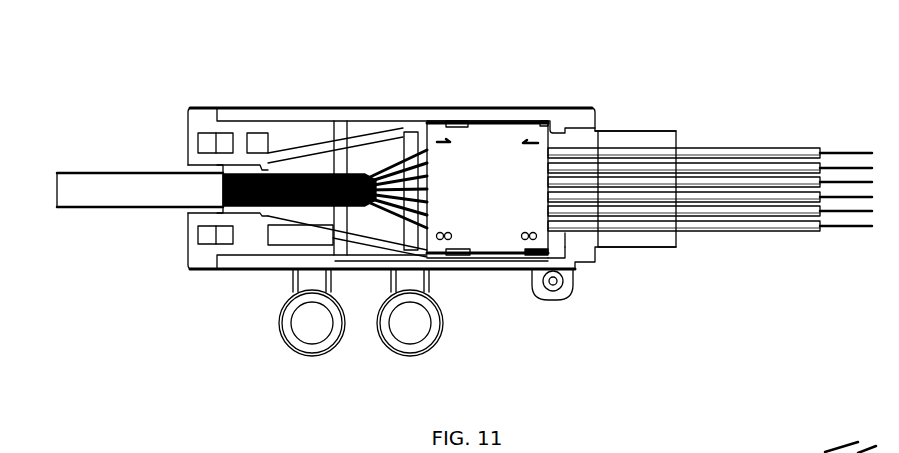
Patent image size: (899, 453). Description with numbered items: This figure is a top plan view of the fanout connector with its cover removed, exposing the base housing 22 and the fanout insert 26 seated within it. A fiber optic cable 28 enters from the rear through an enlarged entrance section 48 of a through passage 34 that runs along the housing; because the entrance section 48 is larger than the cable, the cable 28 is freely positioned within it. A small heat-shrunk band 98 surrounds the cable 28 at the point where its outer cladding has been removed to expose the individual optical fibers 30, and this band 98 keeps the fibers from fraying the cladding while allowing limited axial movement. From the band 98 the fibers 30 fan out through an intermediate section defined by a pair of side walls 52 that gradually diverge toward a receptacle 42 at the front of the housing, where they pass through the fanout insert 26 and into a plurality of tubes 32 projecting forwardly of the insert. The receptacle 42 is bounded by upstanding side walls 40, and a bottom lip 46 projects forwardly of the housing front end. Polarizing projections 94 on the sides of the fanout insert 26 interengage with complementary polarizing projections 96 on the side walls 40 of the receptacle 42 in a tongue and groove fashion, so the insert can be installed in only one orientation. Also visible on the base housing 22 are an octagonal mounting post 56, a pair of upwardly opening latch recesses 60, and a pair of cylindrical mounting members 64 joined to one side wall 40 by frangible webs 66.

The base housing 22 is at (578, 109).
The fanout insert 26 is at (486, 152).
The fiber optic cable 28 is at (78, 192).
The optical fibers 30 is at (380, 180).
The tubes 32 is at (793, 227).
The through passage 34 is at (412, 140).
The side walls 40 is at (538, 116).
The receptacle 42 is at (600, 131).
The bottom lip 46 is at (665, 238).
The entrance section 48 is at (207, 209).
The side walls 52 is at (300, 152).
The mounting post 56 is at (562, 283).
The latch recesses 60 is at (217, 143).
The mounting members 64 is at (386, 343).
The frangible webs 66 is at (412, 282).
The polarizing projections 94 is at (428, 124).
The polarizing projections 96 is at (459, 122).
The band 98 is at (207, 170).